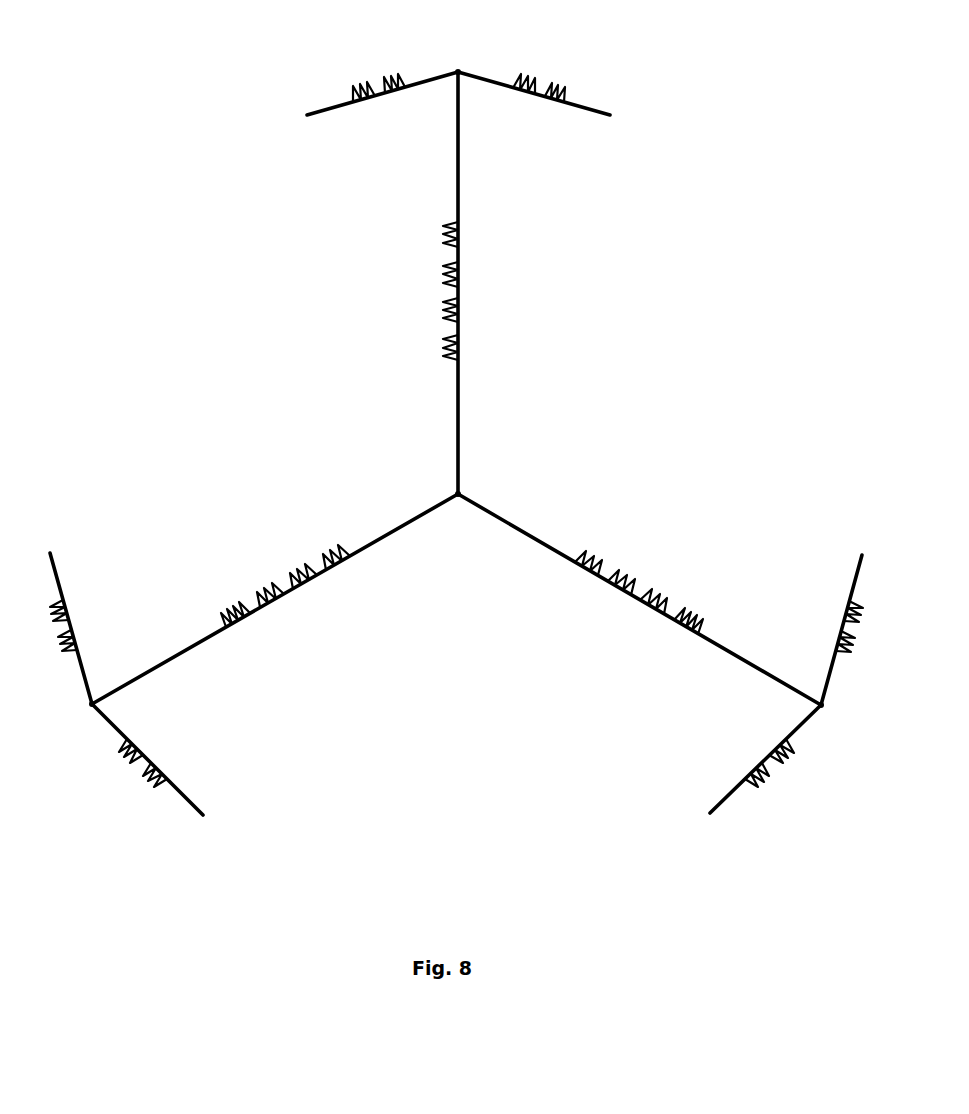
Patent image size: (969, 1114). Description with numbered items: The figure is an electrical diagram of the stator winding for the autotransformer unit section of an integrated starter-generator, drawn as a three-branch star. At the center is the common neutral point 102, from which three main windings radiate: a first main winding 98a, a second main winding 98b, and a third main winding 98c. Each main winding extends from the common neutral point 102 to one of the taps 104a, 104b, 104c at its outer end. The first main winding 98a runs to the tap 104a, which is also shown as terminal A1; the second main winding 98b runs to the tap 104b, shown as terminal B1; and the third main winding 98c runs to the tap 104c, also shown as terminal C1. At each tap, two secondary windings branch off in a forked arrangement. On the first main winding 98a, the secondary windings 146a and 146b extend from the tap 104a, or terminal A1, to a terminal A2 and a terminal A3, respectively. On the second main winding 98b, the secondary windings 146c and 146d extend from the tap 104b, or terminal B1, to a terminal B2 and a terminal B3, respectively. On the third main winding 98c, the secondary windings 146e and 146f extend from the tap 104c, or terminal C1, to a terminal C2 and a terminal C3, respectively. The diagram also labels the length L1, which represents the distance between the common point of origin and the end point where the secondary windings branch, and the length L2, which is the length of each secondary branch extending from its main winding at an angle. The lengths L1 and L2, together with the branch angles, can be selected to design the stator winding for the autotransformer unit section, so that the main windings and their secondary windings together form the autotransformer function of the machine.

The first main winding 98a is at (458, 293).
The second main winding 98b is at (625, 600).
The third main winding 98c is at (283, 592).
The common neutral point 102 is at (460, 494).
The tap 104a is at (460, 70).
The tap 104b is at (823, 713).
The tap 104c is at (85, 717).
The secondary winding 146a is at (378, 90).
The secondary winding 146b is at (537, 97).
The secondary winding 146c is at (838, 623).
The secondary winding 146d is at (765, 760).
The secondary winding 146e is at (150, 758).
The secondary winding 146f is at (72, 618).
The terminal A1 is at (459, 50).
The terminal A2 is at (628, 122).
The terminal A3 is at (285, 118).
The terminal B1 is at (843, 722).
The terminal B2 is at (690, 823).
The terminal B3 is at (852, 542).
The terminal C1 is at (64, 722).
The terminal C2 is at (57, 542).
The terminal C3 is at (222, 822).
The length L1 is at (422, 297).
The length L2 is at (384, 118).